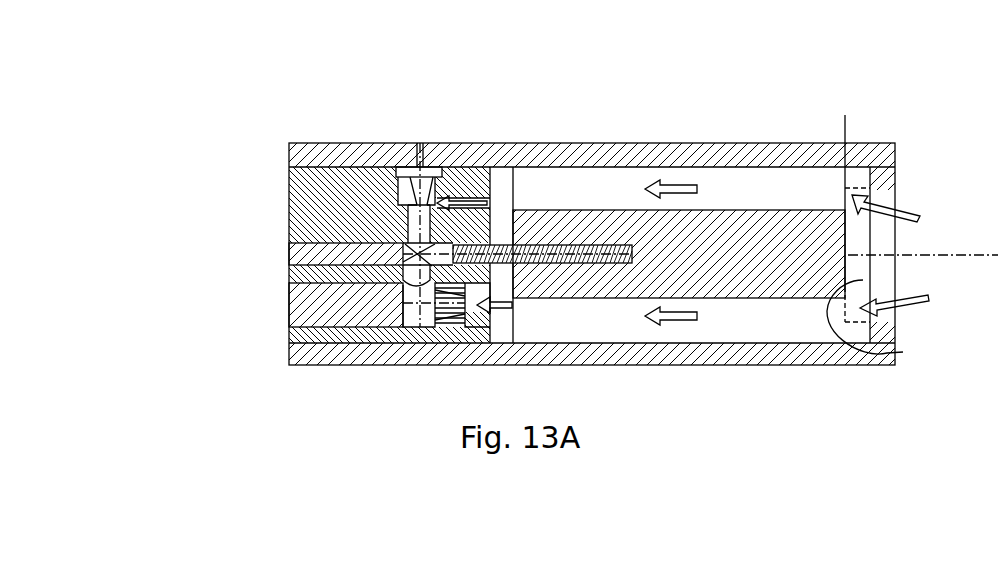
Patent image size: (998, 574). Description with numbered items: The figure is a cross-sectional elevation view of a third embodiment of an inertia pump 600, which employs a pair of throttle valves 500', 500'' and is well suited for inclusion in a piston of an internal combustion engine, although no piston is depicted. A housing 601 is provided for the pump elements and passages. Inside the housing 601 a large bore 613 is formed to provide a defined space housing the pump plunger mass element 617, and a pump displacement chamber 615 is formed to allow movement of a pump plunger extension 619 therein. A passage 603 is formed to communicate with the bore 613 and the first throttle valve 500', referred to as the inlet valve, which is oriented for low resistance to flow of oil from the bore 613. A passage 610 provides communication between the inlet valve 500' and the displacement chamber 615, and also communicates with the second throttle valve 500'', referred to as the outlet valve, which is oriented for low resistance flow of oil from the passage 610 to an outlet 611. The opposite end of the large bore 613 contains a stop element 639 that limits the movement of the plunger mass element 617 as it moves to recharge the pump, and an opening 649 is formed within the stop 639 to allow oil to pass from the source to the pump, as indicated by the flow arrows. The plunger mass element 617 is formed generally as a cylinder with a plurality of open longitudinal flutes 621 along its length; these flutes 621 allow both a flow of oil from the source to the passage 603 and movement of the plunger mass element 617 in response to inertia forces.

The inertia pump 600 is at (653, 117).
The housing 601 is at (825, 140).
The passage 603 is at (512, 305).
The passage 610 is at (412, 224).
The outlet 611 is at (418, 142).
The large bore 613 is at (508, 345).
The pump displacement chamber 615 is at (440, 257).
The pump plunger mass element 617 is at (615, 215).
The pump plunger extension 619 is at (495, 242).
The flutes or grooves 621 is at (760, 187).
The stop element 639 is at (886, 321).
The opening 649 is at (925, 208).
The first throttle valve 500' is at (379, 277).
The second throttle valve 500'' is at (467, 134).